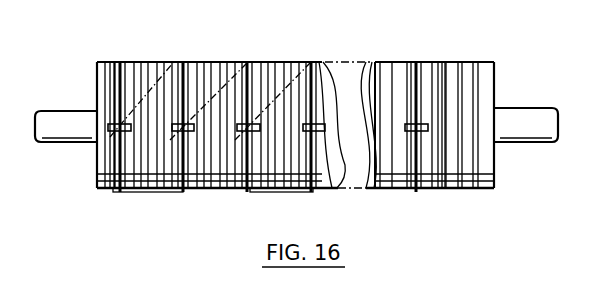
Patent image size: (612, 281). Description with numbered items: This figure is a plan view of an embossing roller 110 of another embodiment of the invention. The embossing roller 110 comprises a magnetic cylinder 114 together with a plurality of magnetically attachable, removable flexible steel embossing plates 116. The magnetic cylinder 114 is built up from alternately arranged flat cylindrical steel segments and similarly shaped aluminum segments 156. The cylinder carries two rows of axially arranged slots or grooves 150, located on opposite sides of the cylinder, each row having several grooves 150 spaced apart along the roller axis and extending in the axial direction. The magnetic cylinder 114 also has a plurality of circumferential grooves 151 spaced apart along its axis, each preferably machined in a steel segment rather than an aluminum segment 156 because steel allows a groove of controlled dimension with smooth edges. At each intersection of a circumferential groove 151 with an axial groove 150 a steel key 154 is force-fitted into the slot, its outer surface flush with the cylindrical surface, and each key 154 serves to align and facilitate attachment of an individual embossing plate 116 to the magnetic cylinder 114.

The embossing roller 110 is at (495, 80).
The magnetic cylinder 114 is at (498, 95).
The embossing plates 116 is at (253, 62).
The axial slots or grooves 150 is at (97, 110).
The circumferential grooves 151 is at (120, 62).
The steel key 154 is at (110, 130).
The aluminum segments 156 is at (478, 62).